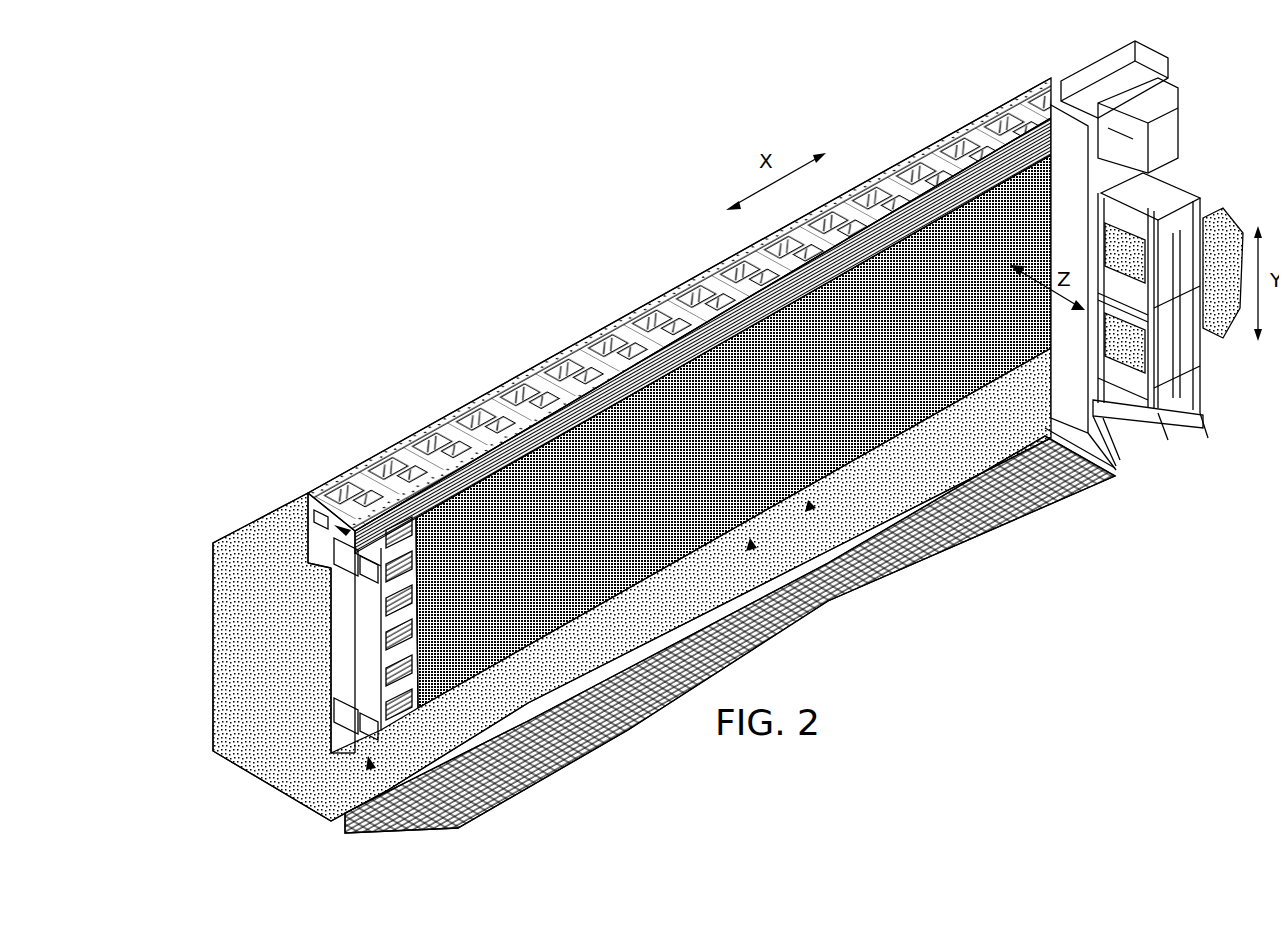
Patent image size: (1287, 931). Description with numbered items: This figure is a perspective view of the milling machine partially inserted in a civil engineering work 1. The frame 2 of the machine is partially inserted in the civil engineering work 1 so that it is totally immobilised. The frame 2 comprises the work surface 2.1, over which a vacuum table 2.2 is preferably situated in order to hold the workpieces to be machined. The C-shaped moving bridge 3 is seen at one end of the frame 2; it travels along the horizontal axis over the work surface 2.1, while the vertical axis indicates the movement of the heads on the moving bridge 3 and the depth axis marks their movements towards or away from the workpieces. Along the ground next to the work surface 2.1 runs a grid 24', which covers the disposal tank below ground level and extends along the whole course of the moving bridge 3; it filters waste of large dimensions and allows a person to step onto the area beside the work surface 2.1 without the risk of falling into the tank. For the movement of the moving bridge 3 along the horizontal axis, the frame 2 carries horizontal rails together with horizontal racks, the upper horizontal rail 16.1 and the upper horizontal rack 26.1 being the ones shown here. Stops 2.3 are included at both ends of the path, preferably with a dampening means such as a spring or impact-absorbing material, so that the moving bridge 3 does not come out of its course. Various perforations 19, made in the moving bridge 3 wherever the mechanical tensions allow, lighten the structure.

The civil engineering work 1 is at (243, 665).
The frame 2 is at (700, 258).
The work surface 2.1 is at (397, 663).
The vacuum table 2.2 is at (637, 625).
The stops 2.3 is at (300, 490).
The moving bridge 3 is at (1127, 445).
The horizontal rail 16.1 is at (491, 421).
The perforations 19 is at (1158, 158).
The grid 24' is at (1022, 537).
The horizontal rack 26.1 is at (548, 400).